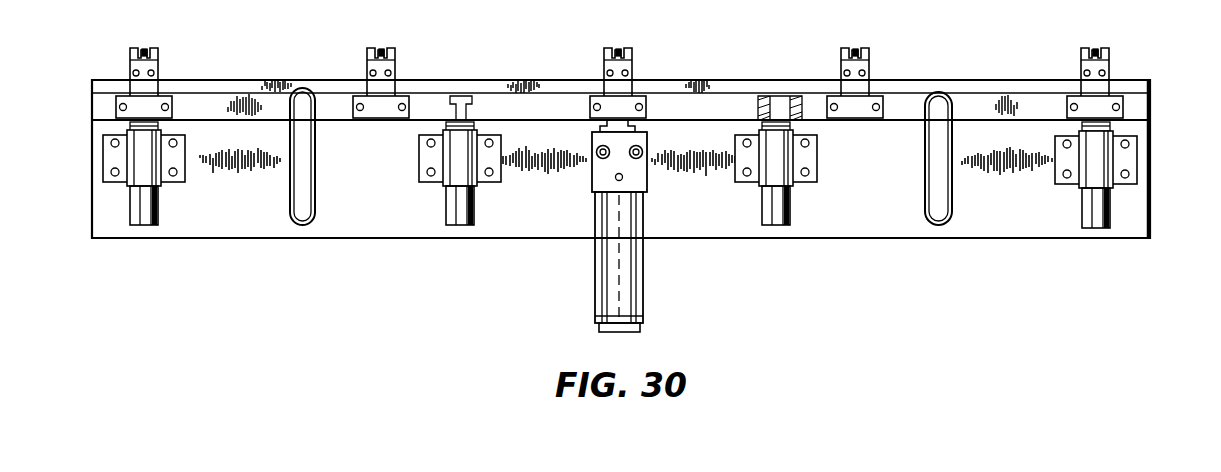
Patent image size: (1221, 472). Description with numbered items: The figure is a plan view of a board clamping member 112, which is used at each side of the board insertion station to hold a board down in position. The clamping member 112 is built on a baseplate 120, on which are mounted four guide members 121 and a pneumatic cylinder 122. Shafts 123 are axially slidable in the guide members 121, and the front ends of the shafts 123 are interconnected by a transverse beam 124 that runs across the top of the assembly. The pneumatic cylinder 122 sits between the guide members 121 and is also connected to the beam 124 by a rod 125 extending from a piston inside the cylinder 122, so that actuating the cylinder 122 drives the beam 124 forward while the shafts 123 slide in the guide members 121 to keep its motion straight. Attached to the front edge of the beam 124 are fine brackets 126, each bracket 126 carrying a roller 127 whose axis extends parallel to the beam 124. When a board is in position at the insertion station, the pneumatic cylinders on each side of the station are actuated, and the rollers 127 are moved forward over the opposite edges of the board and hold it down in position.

The clamping member 112 is at (563, 248).
The baseplate 120 is at (910, 215).
The guide member 121 is at (178, 158).
The pneumatic cylinder 122 is at (643, 271).
The shaft 123 is at (145, 215).
The transverse beam 124 is at (1148, 110).
The rod 125 is at (592, 123).
The bracket 126 is at (158, 70).
The roller 127 is at (145, 47).